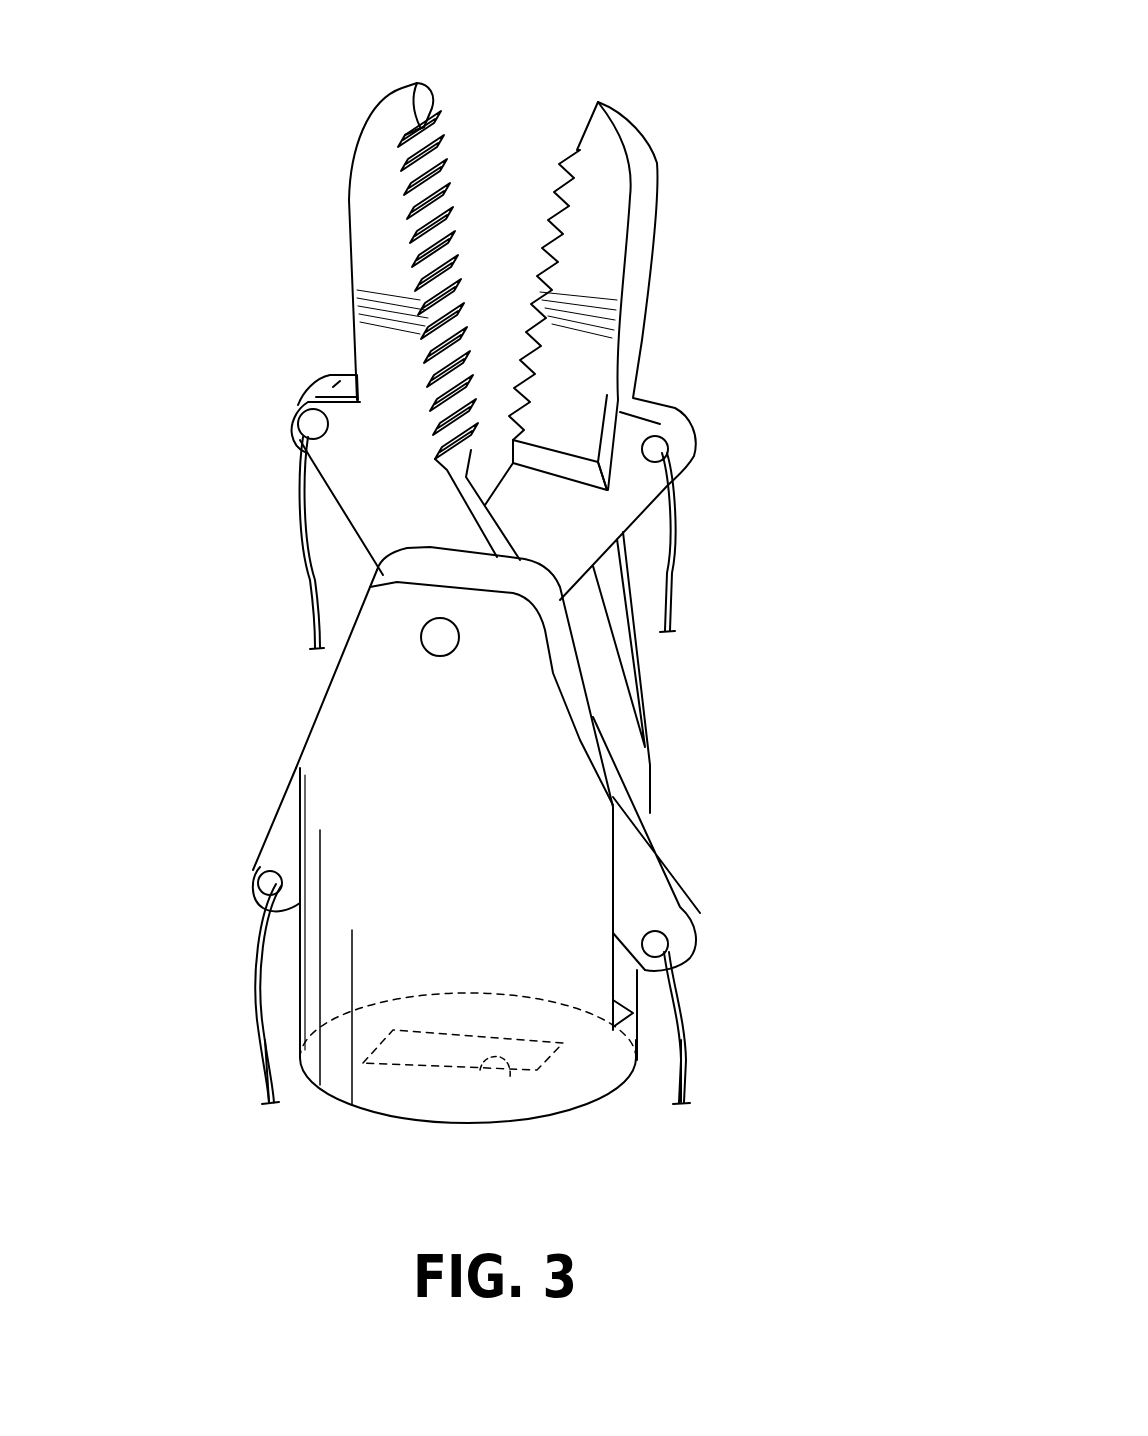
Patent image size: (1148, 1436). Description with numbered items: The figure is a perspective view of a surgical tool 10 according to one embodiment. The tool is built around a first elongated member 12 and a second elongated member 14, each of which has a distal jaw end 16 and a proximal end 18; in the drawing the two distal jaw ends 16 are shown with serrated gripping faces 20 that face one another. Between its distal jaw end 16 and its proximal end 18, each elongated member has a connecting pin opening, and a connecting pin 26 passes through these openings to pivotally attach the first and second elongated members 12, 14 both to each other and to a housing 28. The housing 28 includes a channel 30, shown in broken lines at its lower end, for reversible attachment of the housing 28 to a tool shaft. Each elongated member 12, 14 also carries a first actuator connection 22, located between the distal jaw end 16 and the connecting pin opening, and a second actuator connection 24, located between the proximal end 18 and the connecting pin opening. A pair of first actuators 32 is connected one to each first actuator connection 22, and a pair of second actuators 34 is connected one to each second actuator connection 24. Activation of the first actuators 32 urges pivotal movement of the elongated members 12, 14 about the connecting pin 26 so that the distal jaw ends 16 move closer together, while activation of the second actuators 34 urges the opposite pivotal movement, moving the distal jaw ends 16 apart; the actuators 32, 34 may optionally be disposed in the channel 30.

The surgical tool 10 is at (763, 413).
The first elongated member 12 is at (680, 480).
The second elongated member 14 is at (343, 513).
The distal jaw end 16 is at (415, 87).
The proximal end 18 is at (263, 902).
The serrations 20 is at (550, 227).
The first actuator connection 22 is at (310, 423).
The second actuator connection 24 is at (280, 877).
The connecting pin 26 is at (442, 637).
The housing 28 is at (480, 884).
The channel 30 is at (510, 1073).
The first actuators 32 is at (310, 568).
The second actuators 34 is at (268, 1068).